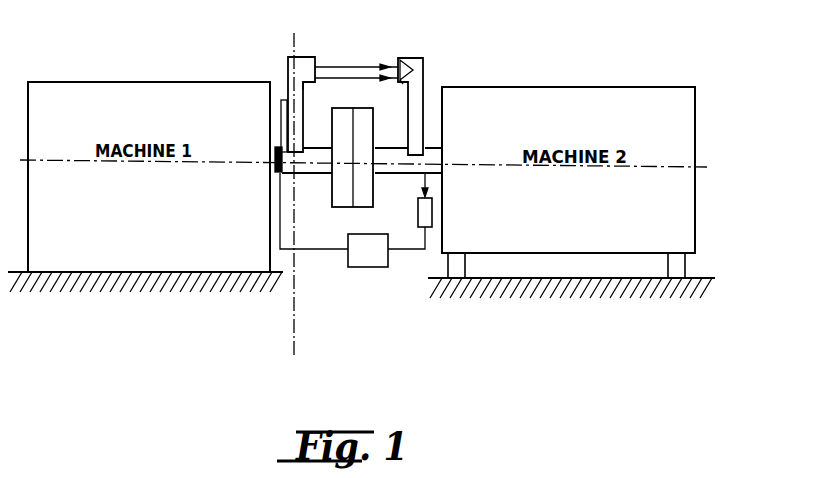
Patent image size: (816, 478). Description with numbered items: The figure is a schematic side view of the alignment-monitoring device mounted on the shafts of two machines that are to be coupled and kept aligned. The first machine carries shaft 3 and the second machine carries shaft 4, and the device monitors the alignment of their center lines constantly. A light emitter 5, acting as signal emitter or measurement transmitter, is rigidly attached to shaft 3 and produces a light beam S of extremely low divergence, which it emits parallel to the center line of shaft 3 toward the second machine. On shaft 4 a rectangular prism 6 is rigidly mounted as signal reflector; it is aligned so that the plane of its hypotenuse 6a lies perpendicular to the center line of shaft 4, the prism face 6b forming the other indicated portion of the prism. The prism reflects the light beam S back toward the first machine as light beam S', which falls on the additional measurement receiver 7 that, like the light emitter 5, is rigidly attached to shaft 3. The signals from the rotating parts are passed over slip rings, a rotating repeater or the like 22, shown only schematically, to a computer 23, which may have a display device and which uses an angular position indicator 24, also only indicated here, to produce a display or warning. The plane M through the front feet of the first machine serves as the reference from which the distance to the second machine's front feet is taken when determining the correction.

The shaft 3 is at (308, 175).
The shaft 4 is at (395, 175).
The light emitter 5 is at (305, 57).
The rectangular prism 6 is at (411, 58).
The hypotenuse 6a is at (402, 82).
The receiver part b 6b is at (410, 72).
The measurement receiver 7 is at (307, 86).
The rotating repeater 22 is at (272, 165).
The computer 23 is at (366, 256).
The angular position indicator 24 is at (432, 212).
The light beam S is at (356, 40).
The light beam S' is at (356, 56).
The plane M is at (294, 340).